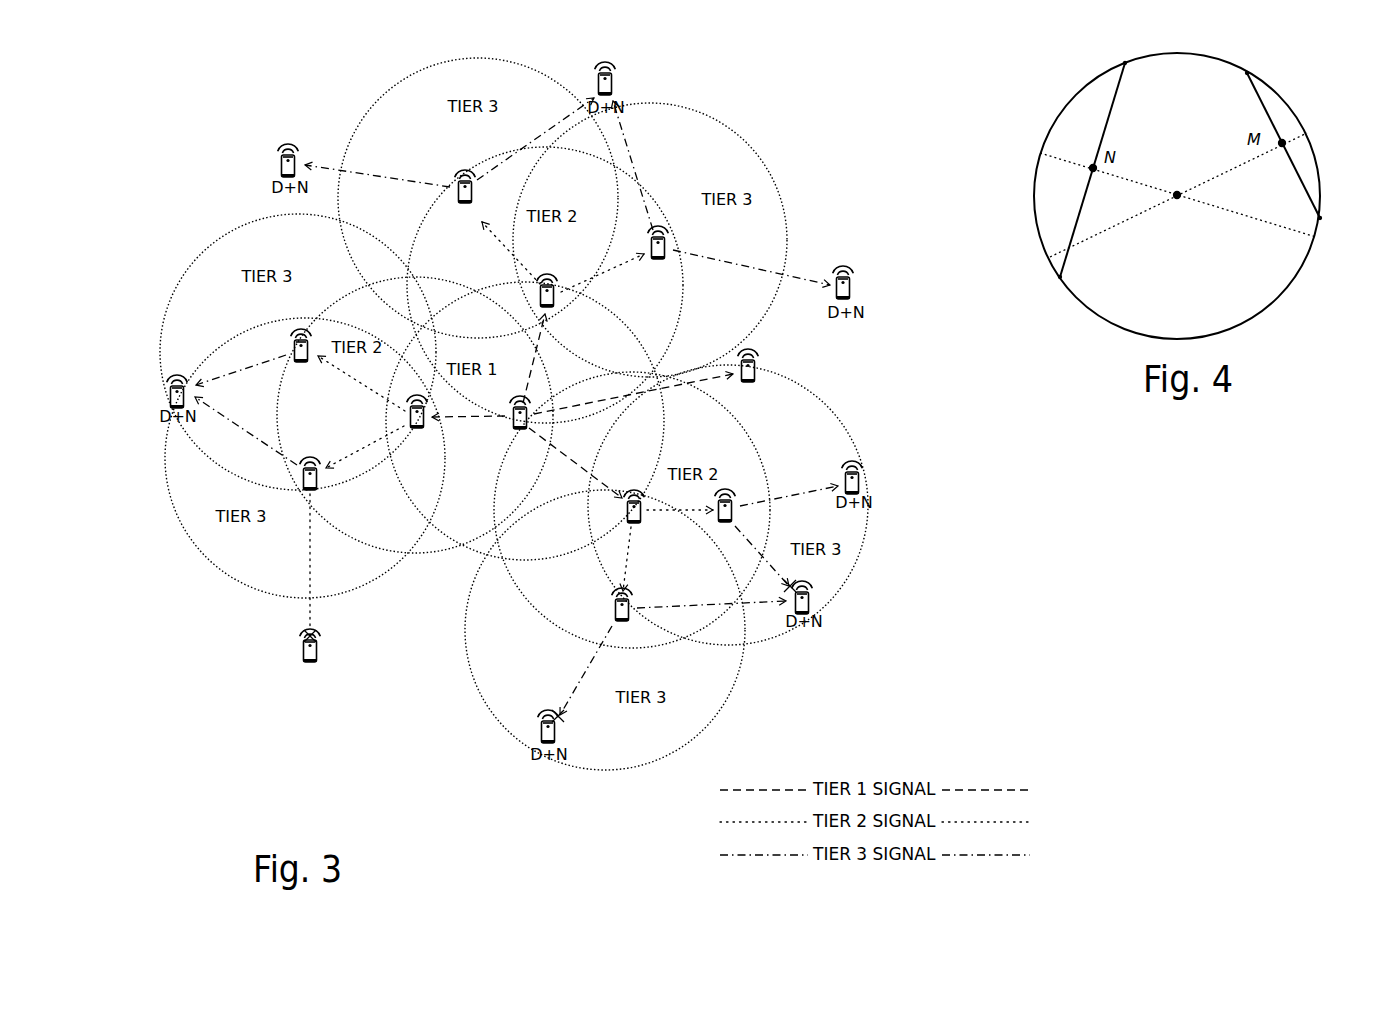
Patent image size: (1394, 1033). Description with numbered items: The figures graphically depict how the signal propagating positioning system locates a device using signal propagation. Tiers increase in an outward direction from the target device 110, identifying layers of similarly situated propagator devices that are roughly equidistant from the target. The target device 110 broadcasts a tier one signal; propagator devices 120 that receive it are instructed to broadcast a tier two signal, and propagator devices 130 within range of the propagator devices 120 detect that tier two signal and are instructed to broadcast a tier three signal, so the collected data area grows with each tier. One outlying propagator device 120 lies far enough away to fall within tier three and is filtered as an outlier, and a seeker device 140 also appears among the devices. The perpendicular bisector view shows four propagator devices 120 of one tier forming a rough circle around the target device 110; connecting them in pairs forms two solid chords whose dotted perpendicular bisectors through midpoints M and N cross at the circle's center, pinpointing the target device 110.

In FIG. 3, the target device 110 is at (519, 422).
In FIG. 4, the target device 110 is at (1179, 212).
In FIG. 3, the propagator device 120 is at (585, 400).
In FIG. 4, the propagator device 120 is at (1190, 170).
In FIG. 3, the propagator device 130 is at (513, 405).
In FIG. 3, the seeker device 140 is at (309, 656).